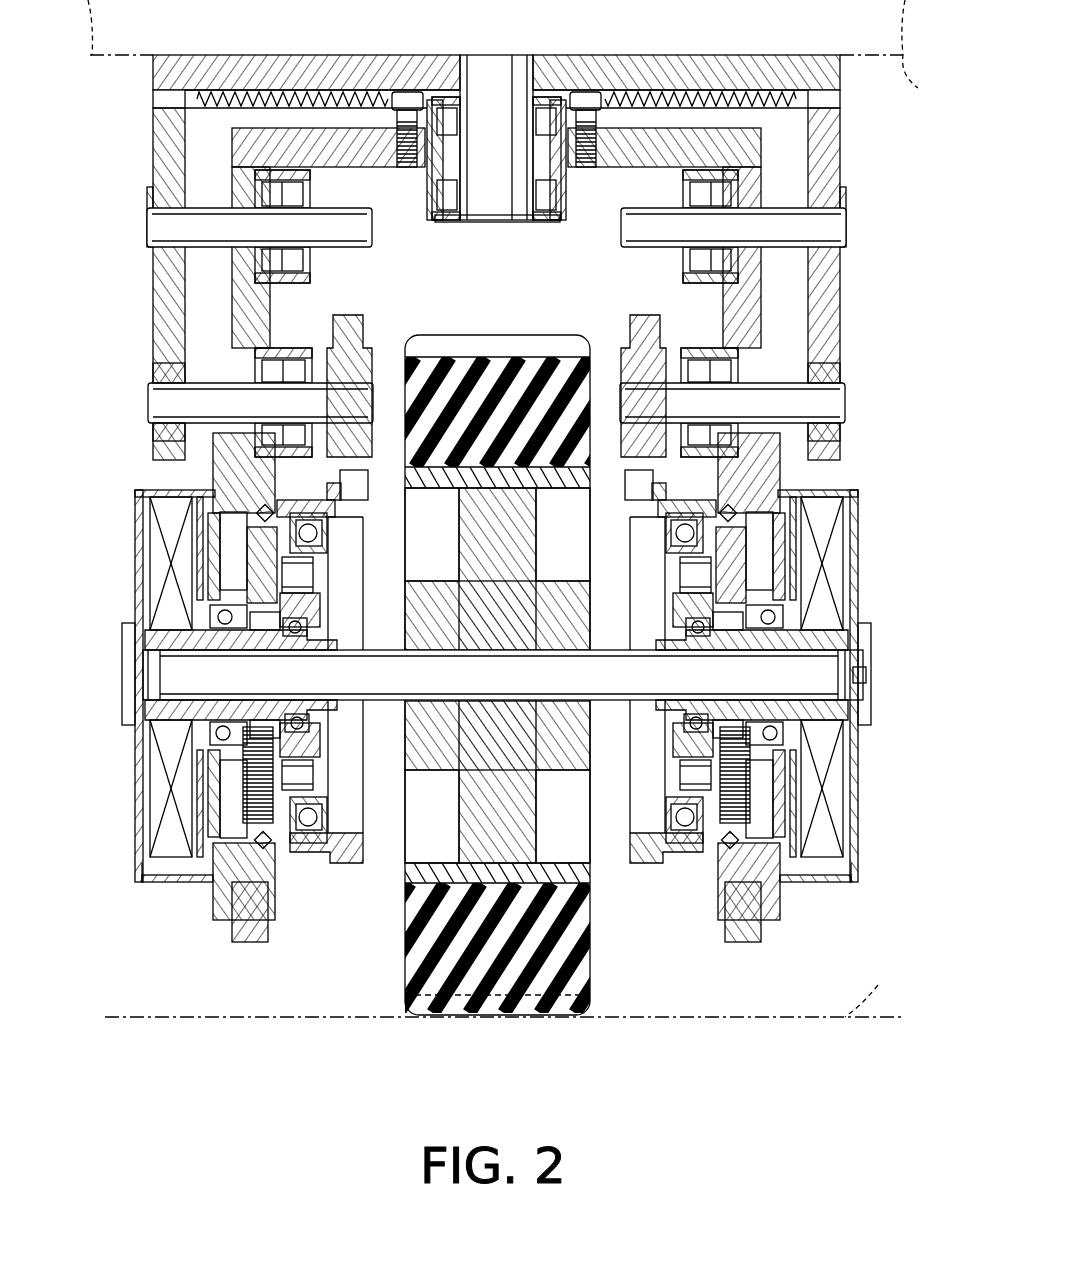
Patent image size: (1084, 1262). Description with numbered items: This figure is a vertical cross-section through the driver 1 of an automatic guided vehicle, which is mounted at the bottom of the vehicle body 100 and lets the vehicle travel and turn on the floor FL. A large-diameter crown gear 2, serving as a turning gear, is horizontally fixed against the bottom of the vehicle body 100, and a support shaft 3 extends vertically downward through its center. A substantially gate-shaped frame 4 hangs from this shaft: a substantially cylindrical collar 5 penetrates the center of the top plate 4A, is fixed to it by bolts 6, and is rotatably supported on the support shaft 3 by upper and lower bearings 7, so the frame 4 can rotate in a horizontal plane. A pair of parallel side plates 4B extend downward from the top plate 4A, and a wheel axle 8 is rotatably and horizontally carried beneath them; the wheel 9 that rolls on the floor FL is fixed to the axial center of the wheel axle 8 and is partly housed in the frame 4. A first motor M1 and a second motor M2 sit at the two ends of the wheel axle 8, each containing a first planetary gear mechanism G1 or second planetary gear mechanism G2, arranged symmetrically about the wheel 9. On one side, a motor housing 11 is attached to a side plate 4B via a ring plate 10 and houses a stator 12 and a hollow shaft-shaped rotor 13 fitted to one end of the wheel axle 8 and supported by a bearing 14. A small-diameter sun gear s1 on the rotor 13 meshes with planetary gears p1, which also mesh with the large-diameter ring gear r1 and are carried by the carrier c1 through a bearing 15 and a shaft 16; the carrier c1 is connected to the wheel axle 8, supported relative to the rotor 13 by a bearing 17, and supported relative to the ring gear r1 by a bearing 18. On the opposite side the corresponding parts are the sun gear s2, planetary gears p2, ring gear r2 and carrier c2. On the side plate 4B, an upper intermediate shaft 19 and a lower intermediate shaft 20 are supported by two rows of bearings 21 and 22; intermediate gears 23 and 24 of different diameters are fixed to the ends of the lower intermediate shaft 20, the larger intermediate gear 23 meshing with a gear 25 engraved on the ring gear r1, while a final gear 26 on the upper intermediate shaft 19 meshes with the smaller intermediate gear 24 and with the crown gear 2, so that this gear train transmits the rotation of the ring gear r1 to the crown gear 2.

The vehicle body 100 is at (937, 97).
The driver 1 is at (888, 180).
The crown gear 2 is at (799, 108).
The support shaft 3 is at (496, 215).
The frame 4 is at (230, 152).
The top plate 4A is at (292, 128).
The side plate 4B is at (245, 312).
The collar 5 is at (432, 188).
The bolt 6 is at (404, 92).
The bearing 7 is at (541, 100).
The wheel axle 8 is at (607, 658).
The wheel 9 is at (590, 992).
The ring plate 10 is at (230, 910).
The motor housing 11 is at (137, 540).
The stator 12 is at (150, 825).
The rotor 13 is at (140, 745).
The bearing 14 is at (222, 722).
The bearing 15 is at (258, 633).
The shaft 16 is at (300, 572).
The bearing 17 is at (312, 722).
The bearing 18 is at (318, 817).
The upper intermediate shaft 19 is at (350, 232).
The lower intermediate shaft 20 is at (218, 393).
The bearing 21 is at (288, 198).
The bearing 22 is at (290, 362).
The intermediate gear 23 is at (362, 338).
The intermediate gear 24 is at (160, 378).
The gear 25 is at (330, 490).
The final gear 26 is at (152, 298).
The sun gear s1 is at (302, 612).
The sun gear s2 is at (776, 560).
The carrier c1 is at (340, 628).
The carrier c2 is at (668, 765).
The planetary gear p1 is at (245, 805).
The planetary gear p2 is at (745, 548).
The ring gear r1 is at (300, 852).
The ring gear r2 is at (693, 852).
The first planetary gear mechanism G1 is at (348, 550).
The second planetary gear mechanism G2 is at (650, 568).
The first motor M1 is at (120, 665).
The second motor M2 is at (878, 596).
The floor FL is at (880, 975).